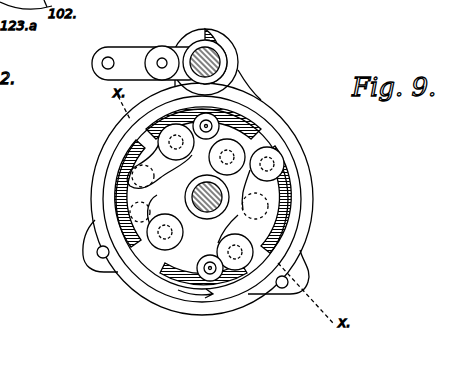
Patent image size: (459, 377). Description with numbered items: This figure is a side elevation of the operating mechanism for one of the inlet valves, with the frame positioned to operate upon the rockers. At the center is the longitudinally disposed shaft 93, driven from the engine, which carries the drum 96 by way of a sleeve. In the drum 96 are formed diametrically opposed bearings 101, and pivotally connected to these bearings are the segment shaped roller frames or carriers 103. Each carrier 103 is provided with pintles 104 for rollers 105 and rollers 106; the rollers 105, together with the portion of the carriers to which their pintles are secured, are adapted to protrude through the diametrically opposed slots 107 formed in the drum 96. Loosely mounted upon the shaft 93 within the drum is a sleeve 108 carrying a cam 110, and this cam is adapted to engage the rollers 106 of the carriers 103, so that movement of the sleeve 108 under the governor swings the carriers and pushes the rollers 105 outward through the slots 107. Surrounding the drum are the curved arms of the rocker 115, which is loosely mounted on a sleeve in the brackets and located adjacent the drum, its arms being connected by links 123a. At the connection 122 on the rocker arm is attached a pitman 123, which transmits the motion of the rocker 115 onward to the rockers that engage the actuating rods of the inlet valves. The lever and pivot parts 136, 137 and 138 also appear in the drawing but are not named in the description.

The shaft 93 is at (236, 184).
The drum 96 is at (218, 190).
The bearings 101 is at (175, 155).
The roller frames or carriers 103 is at (112, 191).
The pintles 104 is at (163, 234).
The rollers 105 is at (115, 217).
The rollers 106 is at (238, 197).
The slots 107 is at (288, 166).
The sleeves 108 is at (170, 228).
The cam 110 is at (205, 218).
The rocker 115 is at (238, 57).
The connection 122 is at (103, 253).
The pitmen 123 is at (92, 256).
The links 123a is at (249, 294).
The pivot pin 136 is at (207, 60).
The pin 137 is at (165, 50).
The lever 138 is at (118, 48).